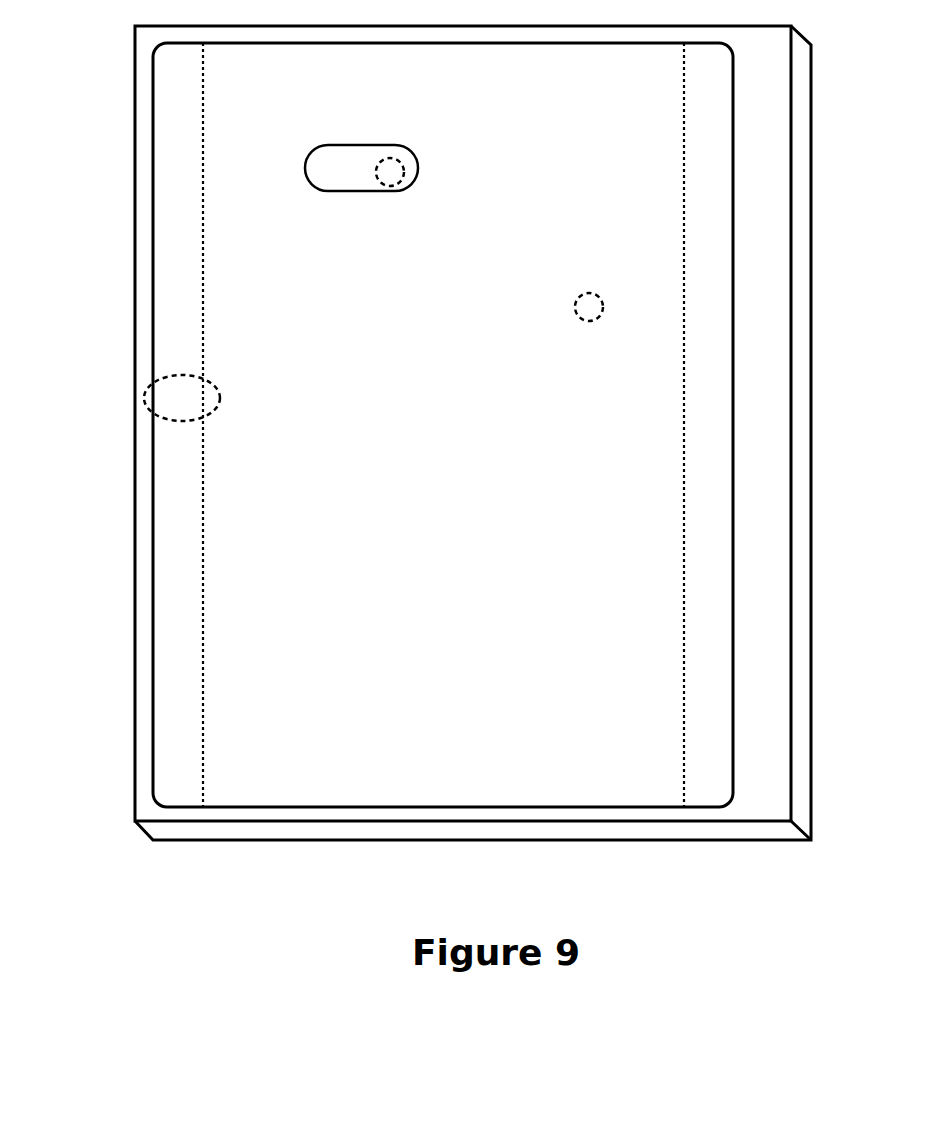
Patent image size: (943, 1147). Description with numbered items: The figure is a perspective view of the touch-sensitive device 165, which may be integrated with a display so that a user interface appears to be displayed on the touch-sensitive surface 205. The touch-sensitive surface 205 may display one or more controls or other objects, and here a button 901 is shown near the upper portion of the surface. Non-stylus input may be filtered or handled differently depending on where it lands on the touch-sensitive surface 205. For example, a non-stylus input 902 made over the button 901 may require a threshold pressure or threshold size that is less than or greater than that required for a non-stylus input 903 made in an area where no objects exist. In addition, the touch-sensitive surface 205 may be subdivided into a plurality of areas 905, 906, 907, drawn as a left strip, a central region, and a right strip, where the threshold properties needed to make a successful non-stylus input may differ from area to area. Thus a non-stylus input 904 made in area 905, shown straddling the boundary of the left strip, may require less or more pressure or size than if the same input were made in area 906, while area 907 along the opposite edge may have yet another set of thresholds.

The touch-sensitive device 165 is at (135, 175).
The touch-sensitive surface 205 is at (155, 277).
The button 901 is at (352, 193).
The non-stylus input 902 is at (405, 185).
The non-stylus input 903 is at (595, 321).
The non-stylus input 904 is at (218, 405).
The area 905 is at (172, 532).
The area 906 is at (248, 605).
The area 907 is at (710, 537).